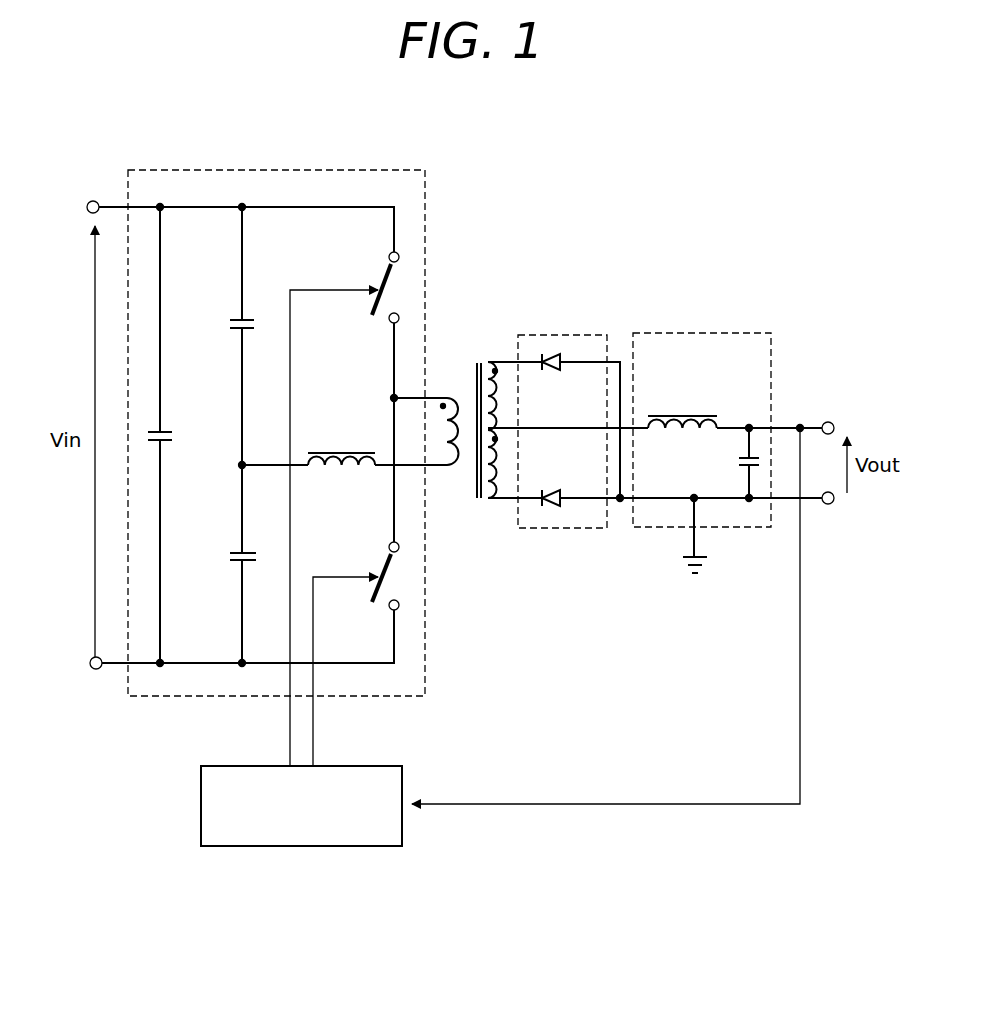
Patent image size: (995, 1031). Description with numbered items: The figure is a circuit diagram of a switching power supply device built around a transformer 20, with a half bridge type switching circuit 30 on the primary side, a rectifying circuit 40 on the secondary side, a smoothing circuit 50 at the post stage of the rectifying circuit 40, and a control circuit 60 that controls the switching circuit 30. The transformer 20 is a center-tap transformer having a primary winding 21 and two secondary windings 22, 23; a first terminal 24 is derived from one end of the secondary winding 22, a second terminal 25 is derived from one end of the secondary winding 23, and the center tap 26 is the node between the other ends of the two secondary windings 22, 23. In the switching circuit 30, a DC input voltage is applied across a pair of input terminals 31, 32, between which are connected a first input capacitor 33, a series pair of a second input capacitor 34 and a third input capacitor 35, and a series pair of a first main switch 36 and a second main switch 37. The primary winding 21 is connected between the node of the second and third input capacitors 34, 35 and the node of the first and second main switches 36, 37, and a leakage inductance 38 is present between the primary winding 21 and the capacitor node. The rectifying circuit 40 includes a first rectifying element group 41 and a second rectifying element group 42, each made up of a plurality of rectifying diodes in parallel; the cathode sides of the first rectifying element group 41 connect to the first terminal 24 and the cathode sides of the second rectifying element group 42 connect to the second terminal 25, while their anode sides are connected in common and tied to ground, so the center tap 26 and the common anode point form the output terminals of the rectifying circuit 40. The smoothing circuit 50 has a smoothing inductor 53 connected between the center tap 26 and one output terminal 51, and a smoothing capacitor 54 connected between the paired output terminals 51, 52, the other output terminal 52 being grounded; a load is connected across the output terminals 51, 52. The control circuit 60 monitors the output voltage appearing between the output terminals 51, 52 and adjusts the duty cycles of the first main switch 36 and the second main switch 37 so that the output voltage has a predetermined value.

The transformer 20 is at (451, 372).
The primary winding 21 is at (455, 452).
The secondary winding 22 is at (504, 392).
The secondary winding 23 is at (498, 486).
The first terminal 24 is at (534, 360).
The second terminal 25 is at (534, 500).
The center tap 26 is at (510, 428).
The switching circuit 30 is at (373, 170).
The input terminal 31 is at (88, 202).
The input terminal 32 is at (90, 668).
The first input capacitor 33 is at (165, 430).
The second input capacitor 34 is at (238, 318).
The third input capacitor 35 is at (238, 550).
The first main switch 36 is at (384, 274).
The second main switch 37 is at (384, 561).
The leakage inductance 38 is at (338, 454).
The rectifying circuit 40 is at (582, 335).
The first rectifying element group 41 is at (560, 366).
The second rectifying element group 42 is at (562, 492).
The smoothing circuit 50 is at (738, 333).
The output terminal 51 is at (832, 421).
The output terminal 52 is at (832, 504).
The smoothing inductor 53 is at (698, 415).
The smoothing capacitor 54 is at (738, 462).
The control circuit 60 is at (355, 766).